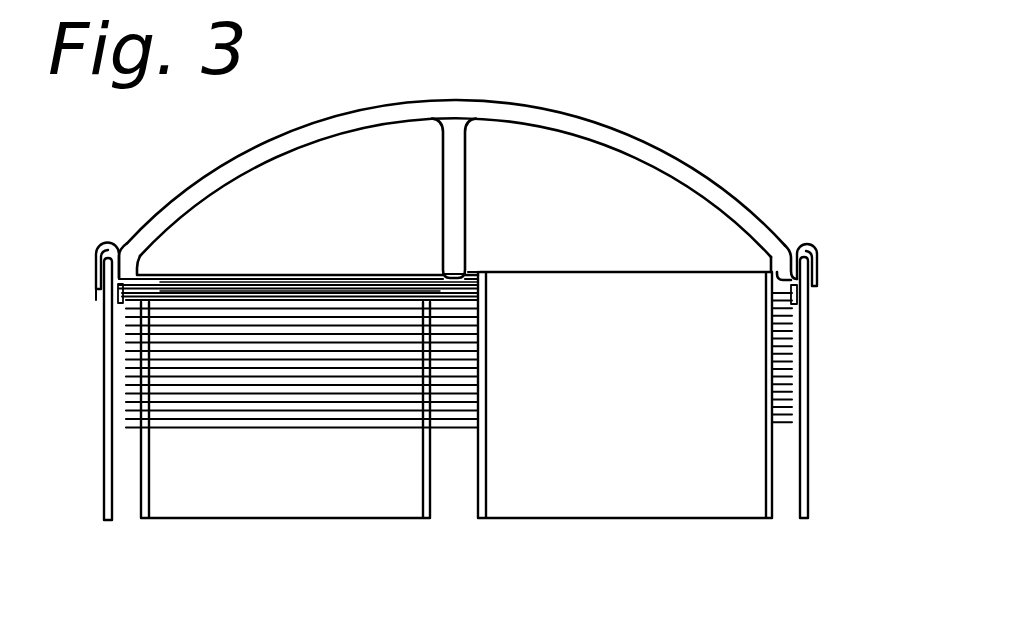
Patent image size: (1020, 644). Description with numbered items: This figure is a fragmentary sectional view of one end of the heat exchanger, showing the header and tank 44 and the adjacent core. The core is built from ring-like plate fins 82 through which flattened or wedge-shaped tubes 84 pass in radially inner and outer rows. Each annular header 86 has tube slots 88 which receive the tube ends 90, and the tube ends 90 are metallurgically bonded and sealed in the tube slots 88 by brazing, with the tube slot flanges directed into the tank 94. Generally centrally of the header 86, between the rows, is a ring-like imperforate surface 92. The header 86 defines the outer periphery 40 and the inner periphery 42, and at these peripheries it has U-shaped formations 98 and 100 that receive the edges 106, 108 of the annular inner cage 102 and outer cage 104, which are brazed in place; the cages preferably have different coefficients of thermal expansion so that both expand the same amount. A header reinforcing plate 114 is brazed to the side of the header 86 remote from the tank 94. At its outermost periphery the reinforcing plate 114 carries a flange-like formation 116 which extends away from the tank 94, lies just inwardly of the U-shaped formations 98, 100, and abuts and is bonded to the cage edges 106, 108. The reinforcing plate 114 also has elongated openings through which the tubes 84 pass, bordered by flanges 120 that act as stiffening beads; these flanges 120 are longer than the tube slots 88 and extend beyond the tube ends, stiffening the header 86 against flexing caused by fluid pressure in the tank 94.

The outer periphery 40 is at (810, 356).
The inner periphery 42 is at (104, 352).
The header and tank 44 is at (458, 144).
The plate fins 82 is at (330, 414).
The tubes 84 is at (356, 502).
The header 86 is at (807, 252).
The tube slots 88 is at (326, 274).
The tube ends 90 is at (600, 272).
The ring-like imperforate surface 92 is at (455, 282).
The tank 94 is at (640, 136).
The U-shaped formation 98 is at (815, 266).
The U-shaped formation 100 is at (96, 263).
The inner cage 102 is at (104, 432).
The outer cage 104 is at (809, 424).
The cage edge 106 is at (106, 252).
The cage edge 108 is at (806, 290).
The header reinforcing plate 114 is at (237, 298).
The flange-like formation 116 is at (108, 300).
The flanges 120 is at (393, 292).